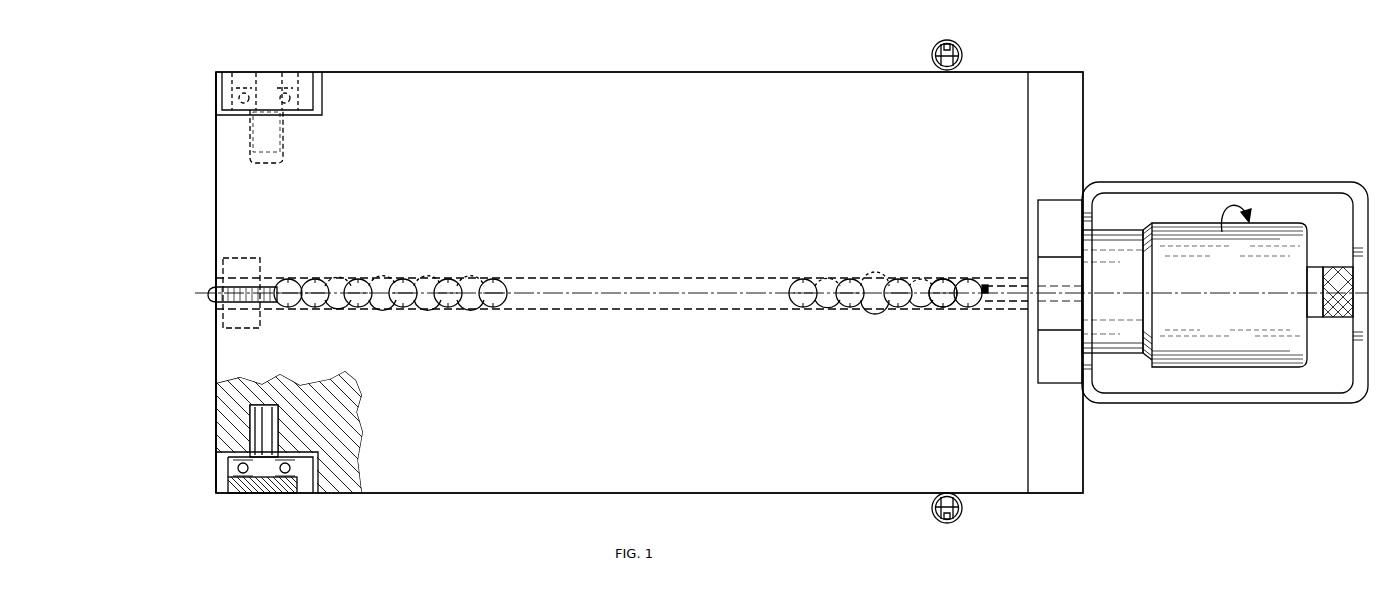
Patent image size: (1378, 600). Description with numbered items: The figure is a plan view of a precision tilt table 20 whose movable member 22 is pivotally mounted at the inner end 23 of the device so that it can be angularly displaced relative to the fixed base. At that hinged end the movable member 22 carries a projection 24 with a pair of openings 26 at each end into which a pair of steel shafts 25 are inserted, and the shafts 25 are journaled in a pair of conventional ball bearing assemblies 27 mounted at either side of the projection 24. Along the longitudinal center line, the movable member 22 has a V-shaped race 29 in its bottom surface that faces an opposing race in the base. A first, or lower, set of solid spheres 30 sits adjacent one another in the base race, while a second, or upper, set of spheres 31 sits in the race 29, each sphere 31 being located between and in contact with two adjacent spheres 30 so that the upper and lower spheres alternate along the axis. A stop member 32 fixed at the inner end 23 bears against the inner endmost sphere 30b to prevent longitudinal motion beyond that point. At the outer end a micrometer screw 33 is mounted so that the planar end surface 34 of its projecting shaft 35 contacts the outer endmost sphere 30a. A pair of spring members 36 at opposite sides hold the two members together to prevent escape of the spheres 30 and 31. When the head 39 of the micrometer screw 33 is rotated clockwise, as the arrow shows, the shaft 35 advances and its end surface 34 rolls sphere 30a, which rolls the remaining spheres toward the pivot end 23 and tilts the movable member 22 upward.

The tilt table 20 is at (214, 340).
The movable member 22 is at (649, 267).
The inner end 23 is at (266, 496).
The projection 24 is at (227, 211).
The steel shafts 25 is at (277, 145).
The openings 26 is at (251, 138).
The ball bearing assemblies 27 is at (236, 94).
The V-shaped race 29 is at (692, 313).
The first set of solid spheres 30 is at (877, 280).
The outer endmost sphere 30a is at (969, 272).
The inner endmost sphere 30b is at (296, 286).
The second set of solid spheres 31 is at (932, 304).
The stop member 32 is at (263, 289).
The micrometer screw 33 is at (1235, 366).
The planar end surface 34 is at (985, 285).
The projecting shaft 35 is at (1005, 303).
The spring members 36 is at (963, 53).
The head 39 is at (1235, 287).